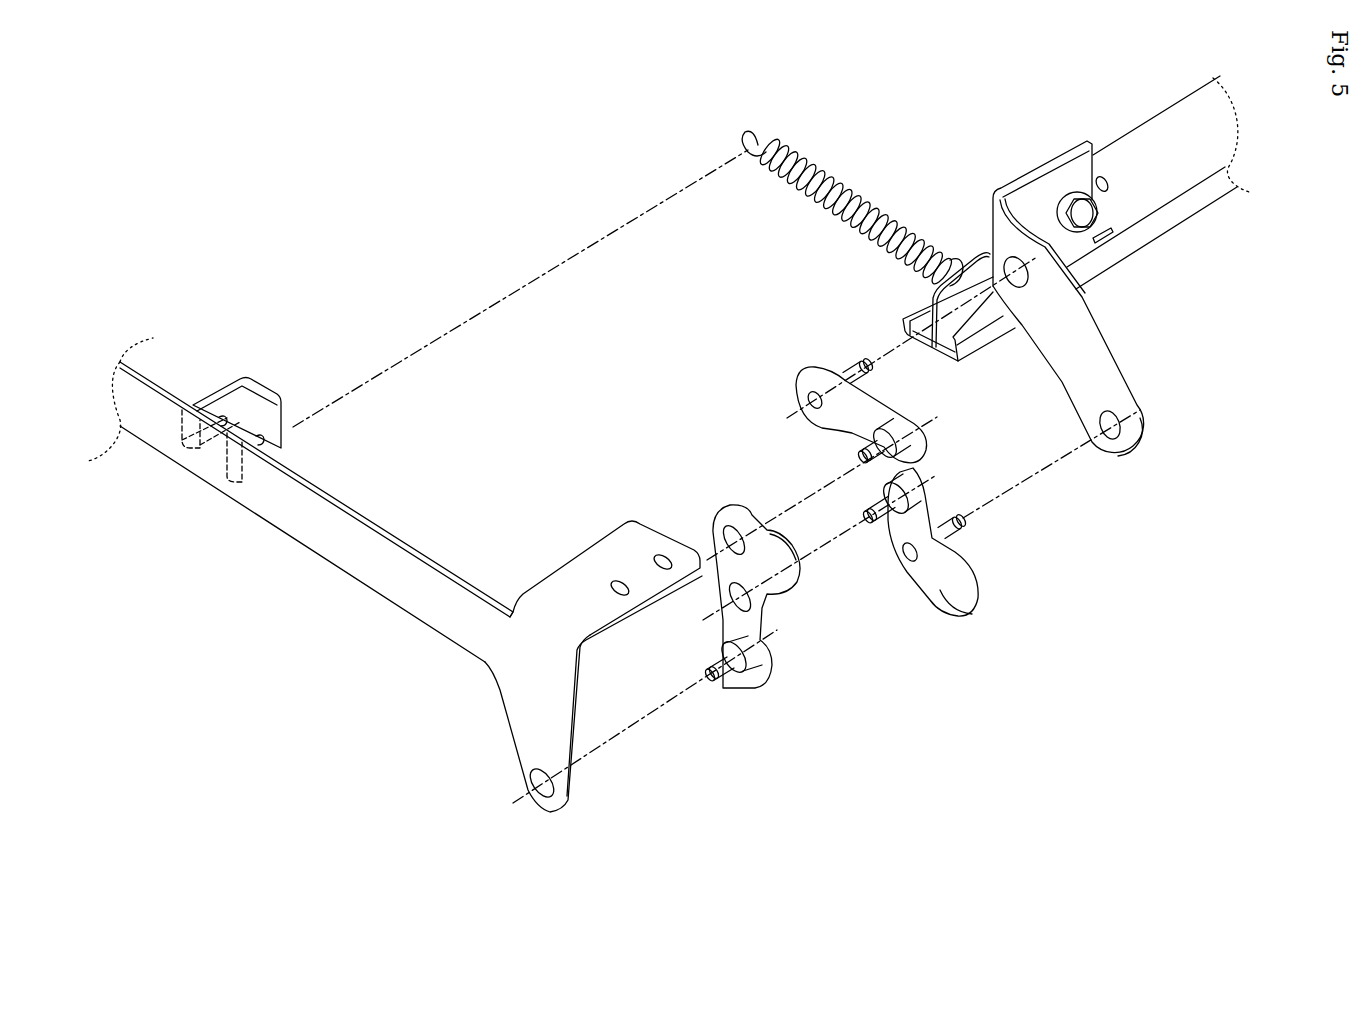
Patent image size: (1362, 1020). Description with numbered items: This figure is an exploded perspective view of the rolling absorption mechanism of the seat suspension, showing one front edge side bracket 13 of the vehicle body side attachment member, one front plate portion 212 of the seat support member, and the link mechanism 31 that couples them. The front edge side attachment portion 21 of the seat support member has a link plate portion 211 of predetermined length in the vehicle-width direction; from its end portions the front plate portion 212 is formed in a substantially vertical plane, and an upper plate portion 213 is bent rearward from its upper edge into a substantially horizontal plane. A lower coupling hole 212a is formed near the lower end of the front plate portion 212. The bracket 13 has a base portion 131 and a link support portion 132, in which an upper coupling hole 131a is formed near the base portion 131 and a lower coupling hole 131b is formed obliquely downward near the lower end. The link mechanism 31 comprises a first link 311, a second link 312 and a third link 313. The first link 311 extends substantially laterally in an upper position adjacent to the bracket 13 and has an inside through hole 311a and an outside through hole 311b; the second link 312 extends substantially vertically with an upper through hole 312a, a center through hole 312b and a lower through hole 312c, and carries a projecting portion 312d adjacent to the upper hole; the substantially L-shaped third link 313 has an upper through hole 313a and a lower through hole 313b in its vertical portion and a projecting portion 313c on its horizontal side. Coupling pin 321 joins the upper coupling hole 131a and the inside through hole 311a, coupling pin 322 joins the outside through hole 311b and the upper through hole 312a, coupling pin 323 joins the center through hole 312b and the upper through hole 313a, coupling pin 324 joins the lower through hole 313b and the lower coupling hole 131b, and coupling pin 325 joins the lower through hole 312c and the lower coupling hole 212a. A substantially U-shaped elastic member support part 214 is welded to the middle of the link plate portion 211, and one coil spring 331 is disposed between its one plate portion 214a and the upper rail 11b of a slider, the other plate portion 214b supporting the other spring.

The front edge side bracket 13 is at (1077, 292).
The base portion 131 is at (1051, 242).
The upper coupling hole 131a is at (1007, 297).
The lower coupling hole 131b is at (1097, 448).
The link support portion 132 is at (1074, 354).
The upper rail 11b is at (975, 258).
The coil spring 331 is at (787, 143).
The front edge side attachment portion 21 is at (394, 590).
The link plate portion 211 is at (281, 521).
The front plate portion 212 is at (567, 715).
The lower coupling hole 212a is at (534, 799).
The upper plate portion 213 is at (600, 558).
The elastic member support part 214 is at (266, 404).
The plate portion 214a is at (282, 444).
The plate portion 214b is at (226, 386).
The link mechanism 31 is at (698, 437).
The first link 311 is at (863, 406).
The inside through hole 311a is at (808, 401).
The outside through hole 311b is at (918, 431).
The second link 312 is at (754, 605).
The upper through hole 312a is at (714, 535).
The center through hole 312b is at (730, 601).
The lower through hole 312c is at (770, 647).
The projecting portion 312d is at (790, 582).
The third link 313 is at (947, 563).
The upper through hole 313a is at (923, 484).
The lower through hole 313b is at (908, 563).
The projecting portion 313c is at (956, 610).
The coupling pin 321 is at (845, 372).
The coupling pin 322 is at (856, 457).
The coupling pin 323 is at (868, 527).
The coupling pin 324 is at (962, 536).
The coupling pin 325 is at (722, 684).